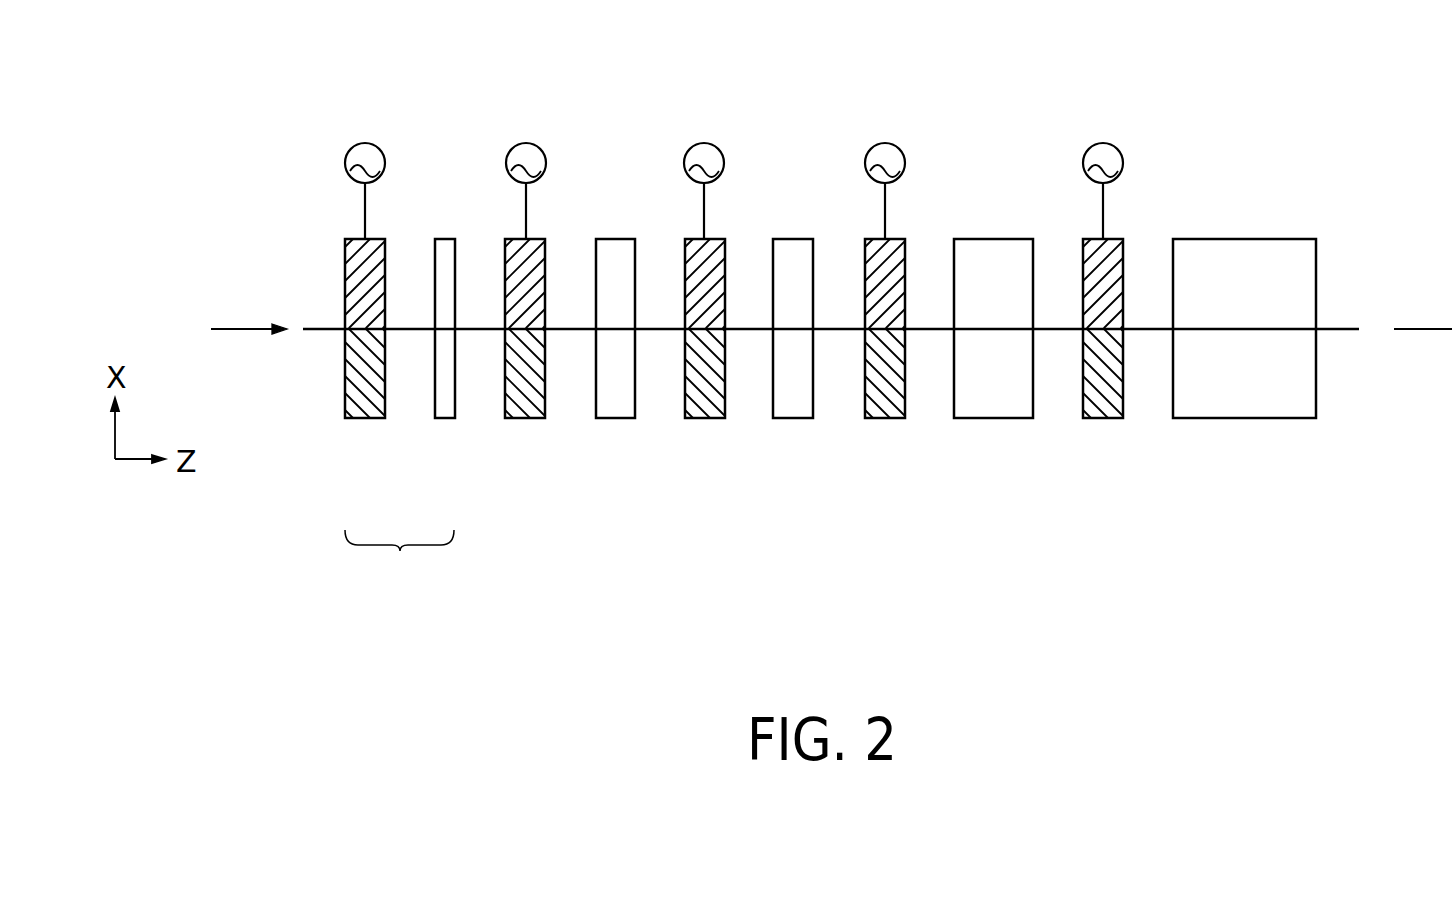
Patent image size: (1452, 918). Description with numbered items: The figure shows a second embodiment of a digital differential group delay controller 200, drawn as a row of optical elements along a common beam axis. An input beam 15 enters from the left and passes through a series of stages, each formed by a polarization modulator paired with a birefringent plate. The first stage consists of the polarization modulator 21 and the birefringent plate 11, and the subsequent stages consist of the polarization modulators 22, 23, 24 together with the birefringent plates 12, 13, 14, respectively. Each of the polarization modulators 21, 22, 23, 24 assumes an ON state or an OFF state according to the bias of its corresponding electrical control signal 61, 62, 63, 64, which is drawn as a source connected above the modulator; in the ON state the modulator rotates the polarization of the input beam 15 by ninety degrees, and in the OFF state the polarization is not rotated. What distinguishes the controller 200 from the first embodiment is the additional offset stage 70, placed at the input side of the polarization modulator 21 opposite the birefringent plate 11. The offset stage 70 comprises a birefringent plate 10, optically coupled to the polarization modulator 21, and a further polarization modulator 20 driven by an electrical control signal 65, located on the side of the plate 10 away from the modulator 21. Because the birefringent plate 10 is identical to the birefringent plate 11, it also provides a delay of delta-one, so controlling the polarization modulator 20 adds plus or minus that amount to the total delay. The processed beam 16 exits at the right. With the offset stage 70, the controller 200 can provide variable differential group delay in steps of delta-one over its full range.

The birefringent plate 10 is at (443, 239).
The birefringent plate 11 is at (613, 239).
The birefringent plate 12 is at (793, 239).
The birefringent plate 13 is at (989, 239).
The birefringent plate 14 is at (1241, 239).
The input beam 15 is at (237, 329).
The output beam 16 is at (1421, 329).
The polarization modulator 20 is at (365, 418).
The polarization modulator 21 is at (525, 418).
The polarization modulator 22 is at (705, 418).
The polarization modulator 23 is at (885, 418).
The polarization modulator 24 is at (1103, 418).
The electrical control signal 61 is at (517, 147).
The electrical control signal 62 is at (695, 147).
The electrical control signal 63 is at (876, 147).
The electrical control signal 64 is at (1094, 147).
The electrical control signal 65 is at (356, 147).
The offset stage 70 is at (399, 559).
The digital DGD controller 200 is at (844, 655).